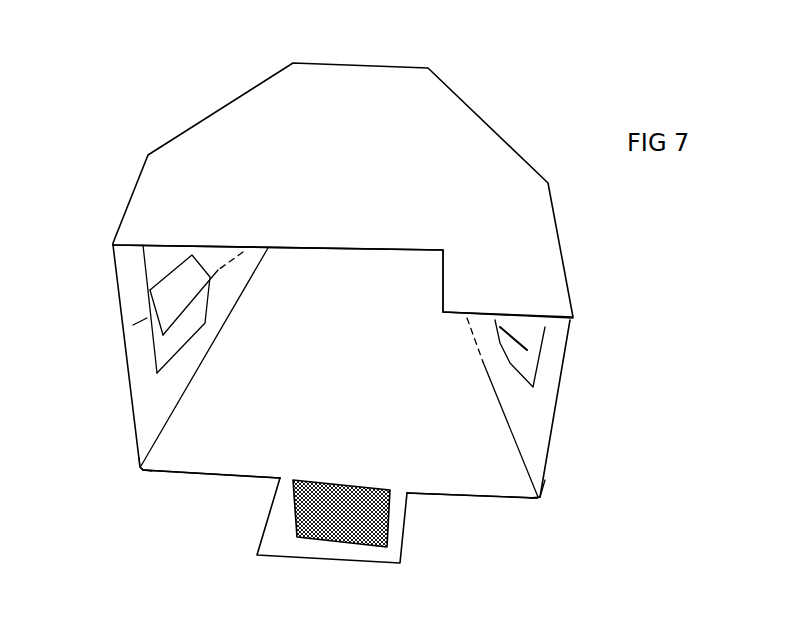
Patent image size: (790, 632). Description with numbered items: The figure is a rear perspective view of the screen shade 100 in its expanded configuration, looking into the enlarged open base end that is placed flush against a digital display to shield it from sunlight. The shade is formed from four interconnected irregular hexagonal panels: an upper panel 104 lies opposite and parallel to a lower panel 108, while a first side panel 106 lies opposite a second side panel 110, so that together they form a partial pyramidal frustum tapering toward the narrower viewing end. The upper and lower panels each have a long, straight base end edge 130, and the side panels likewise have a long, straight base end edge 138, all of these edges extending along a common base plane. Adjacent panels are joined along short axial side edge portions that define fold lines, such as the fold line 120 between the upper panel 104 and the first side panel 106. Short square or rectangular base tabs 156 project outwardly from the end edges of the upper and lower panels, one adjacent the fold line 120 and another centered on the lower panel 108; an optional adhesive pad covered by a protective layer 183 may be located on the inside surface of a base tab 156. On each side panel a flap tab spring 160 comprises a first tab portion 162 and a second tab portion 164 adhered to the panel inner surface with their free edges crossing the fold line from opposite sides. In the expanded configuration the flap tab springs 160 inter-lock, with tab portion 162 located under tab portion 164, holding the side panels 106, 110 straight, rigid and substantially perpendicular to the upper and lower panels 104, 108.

The screen shade 100 is at (192, 72).
The upper panel 104 is at (343, 175).
The first side panel 106 is at (366, 371).
The lower panel 108 is at (472, 522).
The second side panel 110 is at (156, 355).
The fold line 120 is at (337, 250).
The base end edge 130 is at (212, 477).
The base end edge 138 is at (332, 468).
The base tab 156 is at (543, 278).
The flap tab spring 160 is at (127, 348).
The first tab portion 162 is at (284, 374).
The second tab portion 164 is at (353, 321).
The protective layer 183 is at (350, 550).